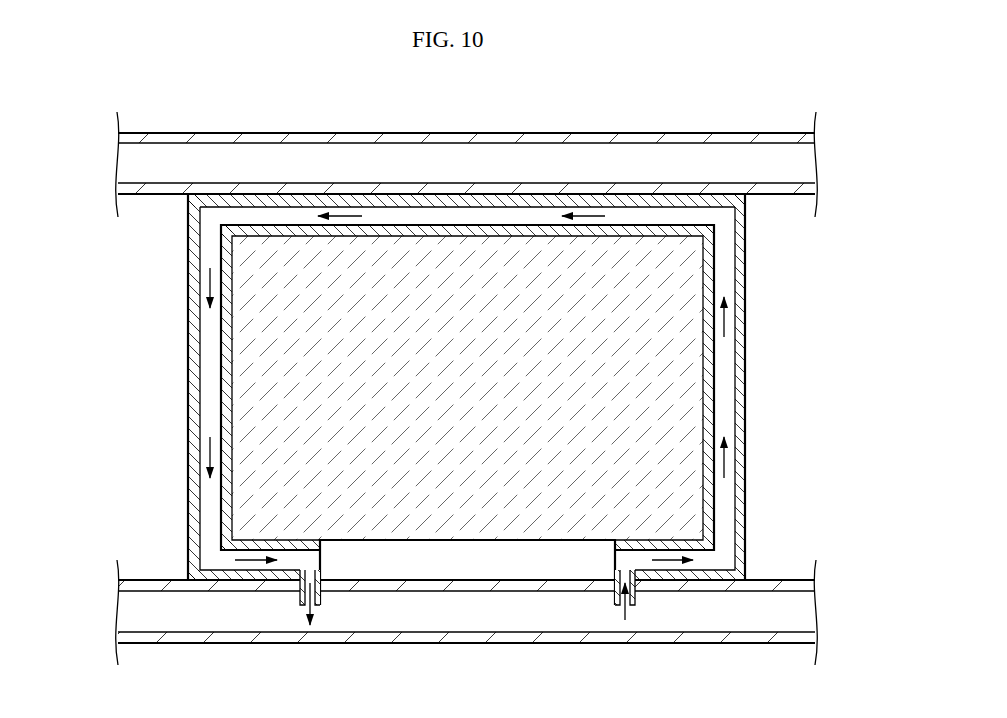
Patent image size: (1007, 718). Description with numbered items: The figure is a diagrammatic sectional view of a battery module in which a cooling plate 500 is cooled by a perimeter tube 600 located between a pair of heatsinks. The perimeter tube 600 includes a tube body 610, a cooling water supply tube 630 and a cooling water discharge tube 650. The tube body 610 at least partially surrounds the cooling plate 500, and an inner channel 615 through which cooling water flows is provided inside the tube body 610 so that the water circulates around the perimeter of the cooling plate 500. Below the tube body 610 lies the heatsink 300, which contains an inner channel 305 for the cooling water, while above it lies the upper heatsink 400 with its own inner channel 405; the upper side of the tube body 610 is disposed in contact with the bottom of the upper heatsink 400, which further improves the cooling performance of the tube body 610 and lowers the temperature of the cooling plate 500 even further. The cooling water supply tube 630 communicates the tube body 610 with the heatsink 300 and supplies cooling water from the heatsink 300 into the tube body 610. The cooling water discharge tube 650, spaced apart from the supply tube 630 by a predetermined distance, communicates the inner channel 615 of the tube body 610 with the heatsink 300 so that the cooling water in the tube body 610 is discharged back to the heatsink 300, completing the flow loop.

The heatsink 300 is at (467, 627).
The inner channel 305 is at (530, 613).
The upper heatsink 400 is at (467, 152).
The inner channel 405 is at (530, 163).
The cooling plate 500 is at (667, 278).
The perimeter tube 600 is at (439, 435).
The tube body 610 is at (745, 322).
The inner channel 615 is at (725, 377).
The cooling water supply tube 630 is at (635, 598).
The cooling water discharge tube 650 is at (300, 598).